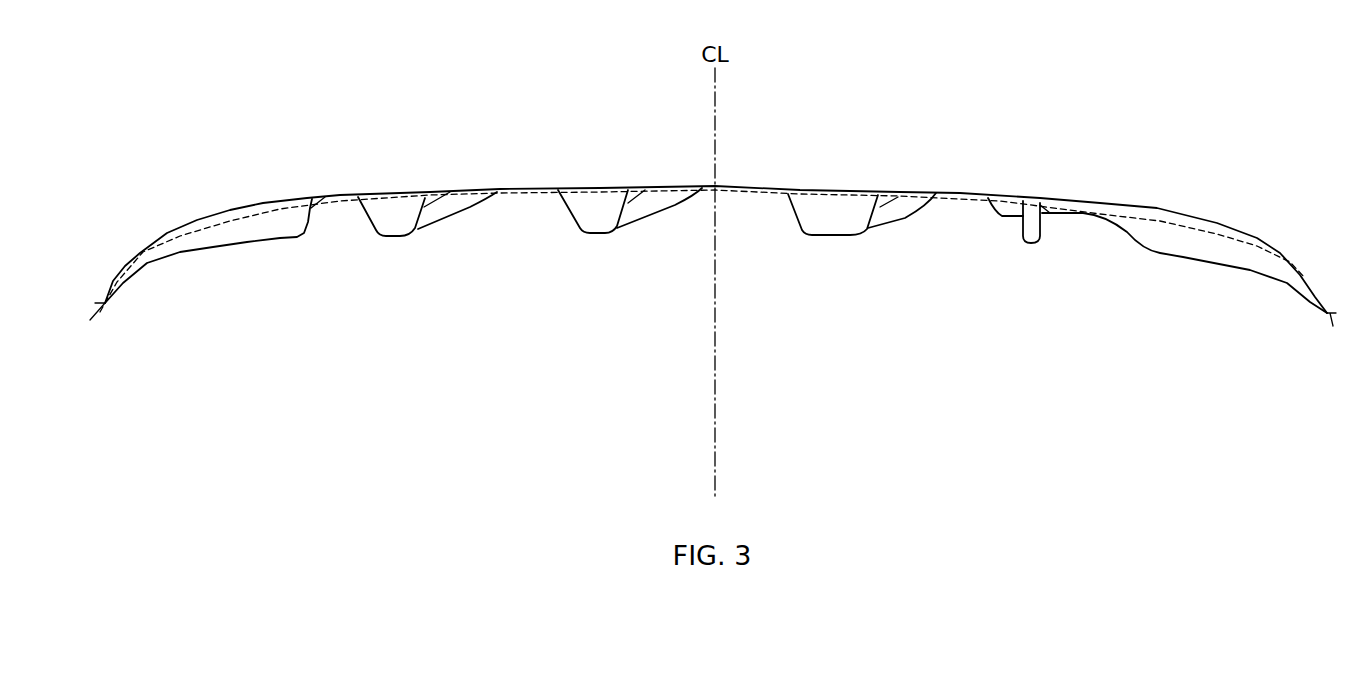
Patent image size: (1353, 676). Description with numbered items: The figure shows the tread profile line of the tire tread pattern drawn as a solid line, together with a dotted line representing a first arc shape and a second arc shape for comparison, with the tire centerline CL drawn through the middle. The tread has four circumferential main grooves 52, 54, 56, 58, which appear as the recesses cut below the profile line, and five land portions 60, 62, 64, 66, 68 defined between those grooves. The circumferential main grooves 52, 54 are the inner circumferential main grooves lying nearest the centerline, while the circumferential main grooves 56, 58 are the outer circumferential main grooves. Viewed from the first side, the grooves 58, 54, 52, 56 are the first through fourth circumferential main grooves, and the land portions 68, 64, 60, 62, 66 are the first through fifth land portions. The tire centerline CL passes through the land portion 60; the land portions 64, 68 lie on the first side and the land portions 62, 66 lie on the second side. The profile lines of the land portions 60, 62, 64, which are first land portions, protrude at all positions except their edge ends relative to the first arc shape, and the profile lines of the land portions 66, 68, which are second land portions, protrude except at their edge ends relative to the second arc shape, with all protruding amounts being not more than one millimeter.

The circumferential main groove 52 is at (598, 207).
The circumferential main groove 54 is at (832, 208).
The circumferential main groove 56 is at (390, 213).
The circumferential main groove 58 is at (1033, 212).
The land portion 60 is at (747, 188).
The land portion 62 is at (518, 187).
The land portion 64 is at (955, 193).
The land portion 66 is at (260, 200).
The land portion 68 is at (1158, 210).